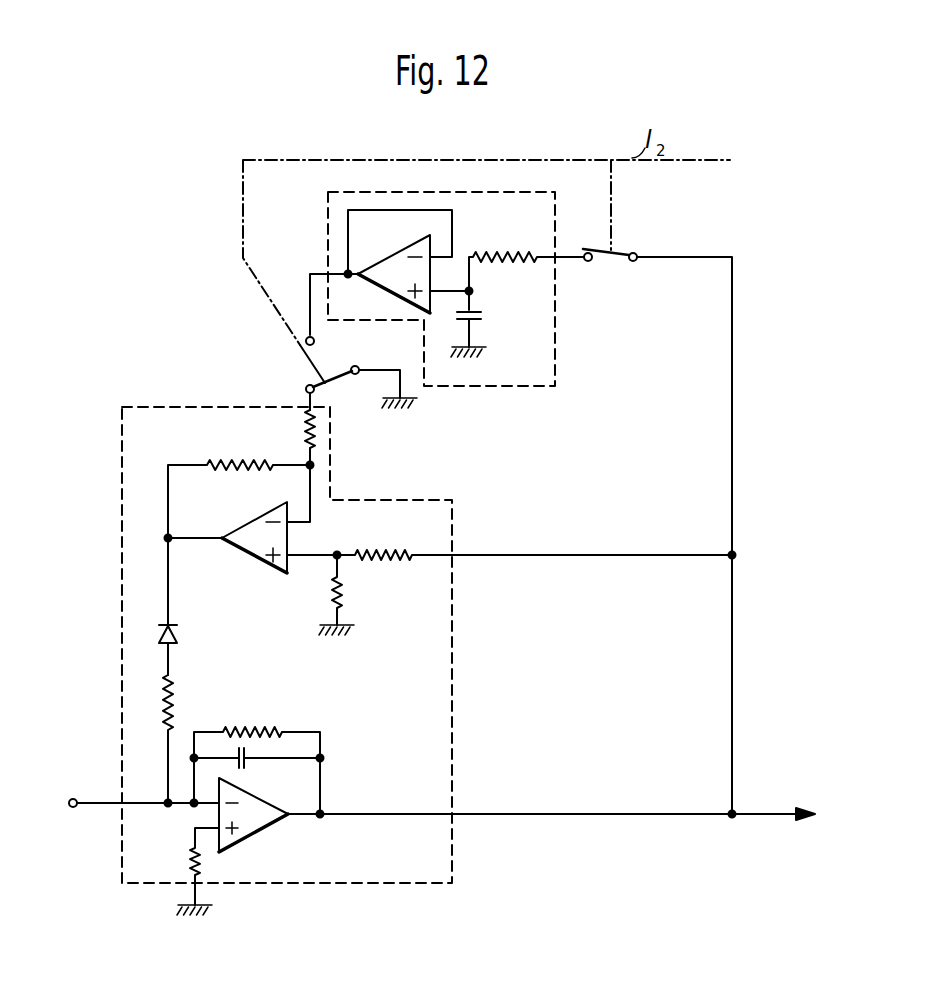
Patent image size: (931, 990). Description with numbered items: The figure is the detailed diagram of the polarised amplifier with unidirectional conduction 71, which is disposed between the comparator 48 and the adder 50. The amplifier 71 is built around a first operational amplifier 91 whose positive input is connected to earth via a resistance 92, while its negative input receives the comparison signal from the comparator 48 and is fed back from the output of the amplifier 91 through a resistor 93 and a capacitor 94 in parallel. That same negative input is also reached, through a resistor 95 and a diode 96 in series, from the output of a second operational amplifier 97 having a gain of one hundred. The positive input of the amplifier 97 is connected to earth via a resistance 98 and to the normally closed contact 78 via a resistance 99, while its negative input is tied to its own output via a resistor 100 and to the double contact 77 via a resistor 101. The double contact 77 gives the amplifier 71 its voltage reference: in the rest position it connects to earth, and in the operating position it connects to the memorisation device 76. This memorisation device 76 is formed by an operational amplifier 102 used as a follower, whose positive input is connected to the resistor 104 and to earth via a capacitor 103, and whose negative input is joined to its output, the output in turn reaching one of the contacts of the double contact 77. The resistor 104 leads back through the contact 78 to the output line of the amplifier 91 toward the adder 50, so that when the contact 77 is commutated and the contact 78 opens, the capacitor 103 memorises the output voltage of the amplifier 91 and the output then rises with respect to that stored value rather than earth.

The comparator 48 is at (73, 798).
The adder 50 is at (551, 804).
The polarised amplifier with unidirectional conduction 71 is at (455, 745).
The memorisation device 76 is at (548, 357).
The double contact 77 is at (337, 370).
The normally closed contact 78 is at (625, 262).
The first operational amplifier 91 is at (259, 823).
The resistance 92 is at (190, 866).
The resistor 93 is at (266, 730).
The capacitor 94 is at (247, 762).
The resistor 95 is at (166, 716).
The diode 96 is at (178, 635).
The second operational amplifier 97 is at (233, 545).
The resistance 98 is at (349, 595).
The resistance 99 is at (404, 552).
The resistor 100 is at (255, 460).
The resistor 101 is at (322, 432).
The operational amplifier 102 is at (382, 265).
The capacitor 103 is at (476, 309).
The resistor 104 is at (522, 256).